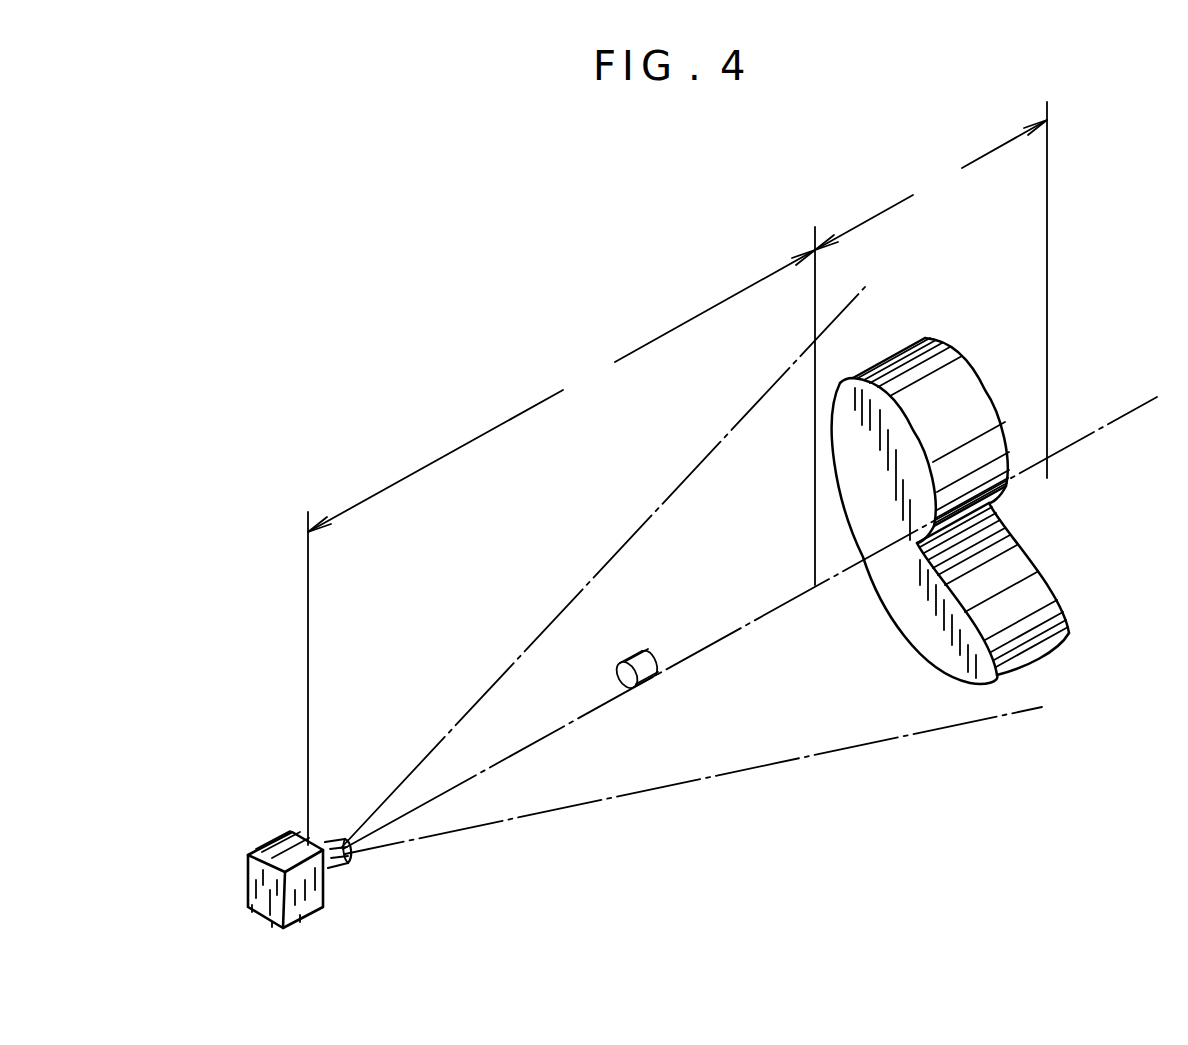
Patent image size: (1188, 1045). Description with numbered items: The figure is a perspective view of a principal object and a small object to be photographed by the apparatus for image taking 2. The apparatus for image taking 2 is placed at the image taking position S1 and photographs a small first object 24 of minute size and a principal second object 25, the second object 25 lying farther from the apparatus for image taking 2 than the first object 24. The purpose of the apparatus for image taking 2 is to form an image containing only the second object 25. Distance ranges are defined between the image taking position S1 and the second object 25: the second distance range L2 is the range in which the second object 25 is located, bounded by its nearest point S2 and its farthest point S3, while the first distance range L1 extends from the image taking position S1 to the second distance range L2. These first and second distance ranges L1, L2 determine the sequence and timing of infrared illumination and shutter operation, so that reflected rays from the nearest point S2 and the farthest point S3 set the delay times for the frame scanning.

The apparatus for image taking 2 is at (283, 838).
The first object 24 is at (657, 678).
The second object 25 is at (1047, 592).
The image taking position S1 is at (308, 606).
The nearest point S2 is at (815, 292).
The farthest point S3 is at (1047, 283).
The first distance range L1 is at (561, 391).
The second distance range L2 is at (931, 185).